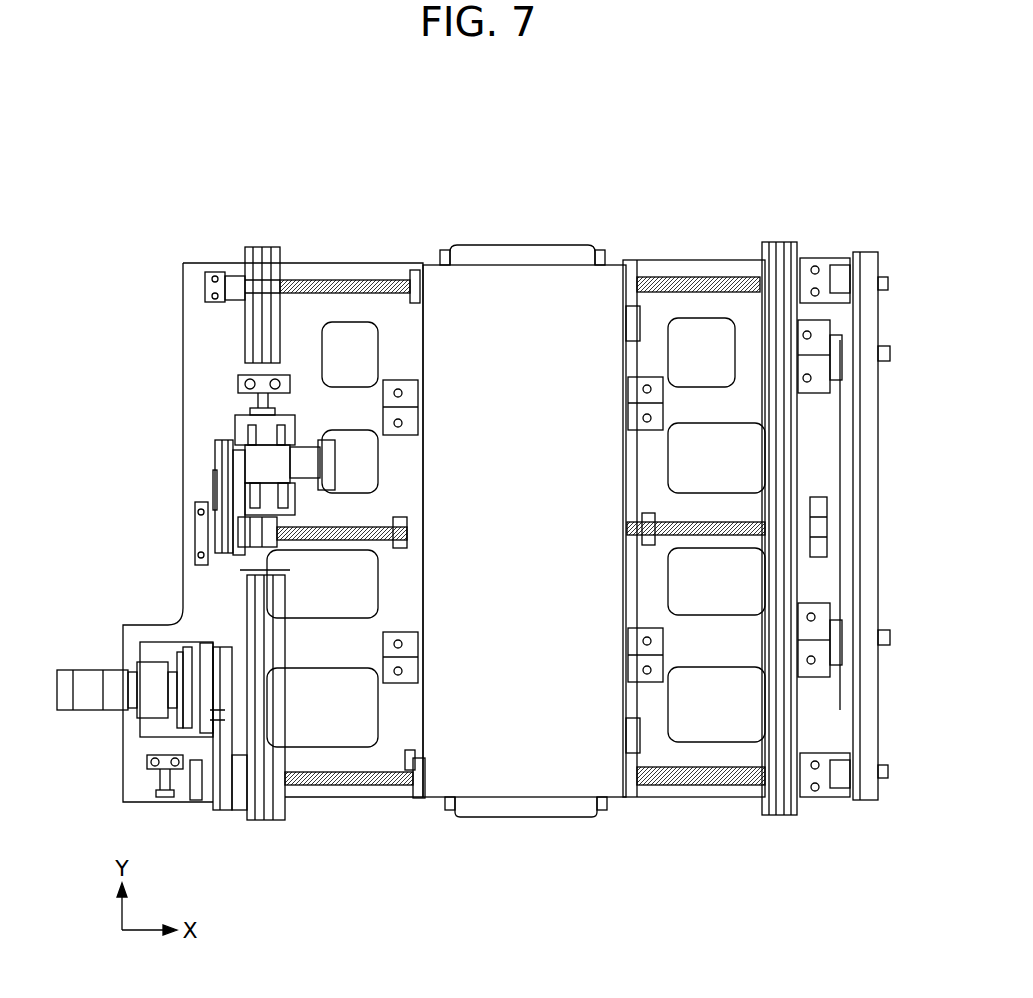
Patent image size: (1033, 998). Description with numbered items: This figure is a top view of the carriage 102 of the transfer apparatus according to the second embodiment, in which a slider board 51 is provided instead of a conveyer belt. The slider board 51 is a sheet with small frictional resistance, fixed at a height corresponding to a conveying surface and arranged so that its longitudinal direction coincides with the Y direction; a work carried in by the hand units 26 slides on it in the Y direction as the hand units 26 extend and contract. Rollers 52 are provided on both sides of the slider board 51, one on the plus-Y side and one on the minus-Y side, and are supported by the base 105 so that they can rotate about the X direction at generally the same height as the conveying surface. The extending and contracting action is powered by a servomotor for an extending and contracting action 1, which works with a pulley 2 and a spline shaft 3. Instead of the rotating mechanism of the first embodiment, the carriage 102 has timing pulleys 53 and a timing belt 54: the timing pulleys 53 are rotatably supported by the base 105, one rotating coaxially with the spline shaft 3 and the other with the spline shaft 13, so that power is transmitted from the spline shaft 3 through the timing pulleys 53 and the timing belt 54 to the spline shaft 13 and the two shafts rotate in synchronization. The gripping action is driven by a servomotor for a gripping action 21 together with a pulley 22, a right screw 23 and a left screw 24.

The carriage 102 is at (230, 184).
The spline shaft 13 is at (358, 280).
The servomotor for a gripping action 21 is at (258, 466).
The pulley 22 is at (225, 502).
The right screw 23 is at (413, 543).
The left screw 24 is at (637, 538).
The hand unit 26 is at (280, 822).
The spline shaft 3 is at (365, 790).
The servomotor for an extending and contracting action 1 is at (152, 690).
The pulley 2 is at (222, 787).
The slider board 51 is at (615, 770).
The roller 52 is at (522, 262).
The base 105 is at (688, 258).
The timing pulley 53 is at (828, 262).
The timing belt 54 is at (865, 255).